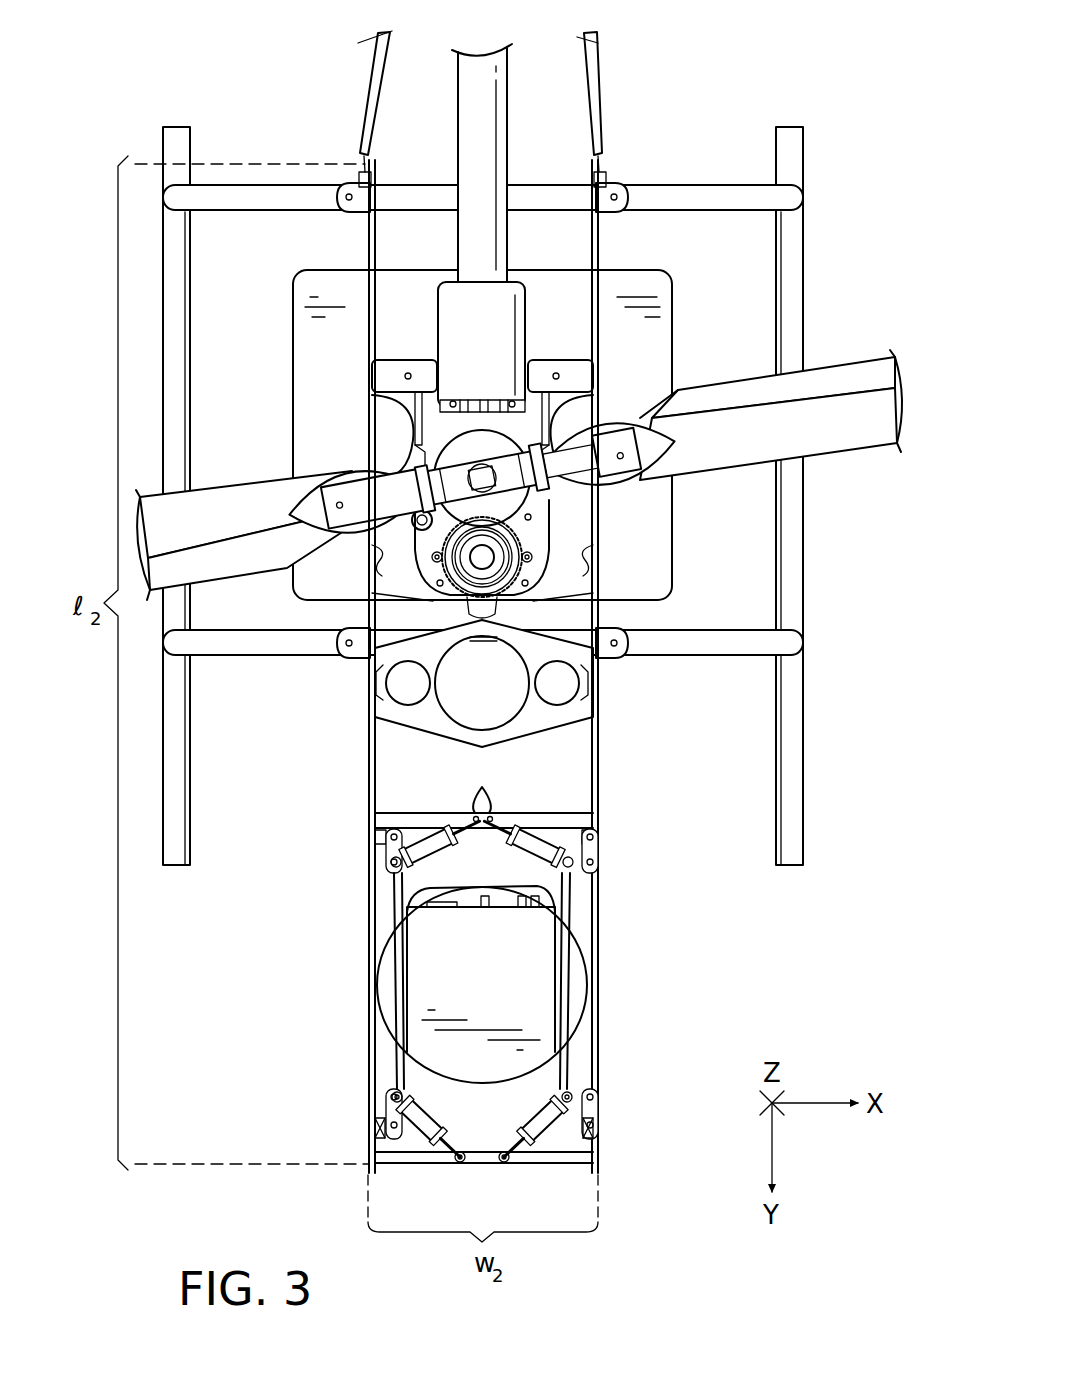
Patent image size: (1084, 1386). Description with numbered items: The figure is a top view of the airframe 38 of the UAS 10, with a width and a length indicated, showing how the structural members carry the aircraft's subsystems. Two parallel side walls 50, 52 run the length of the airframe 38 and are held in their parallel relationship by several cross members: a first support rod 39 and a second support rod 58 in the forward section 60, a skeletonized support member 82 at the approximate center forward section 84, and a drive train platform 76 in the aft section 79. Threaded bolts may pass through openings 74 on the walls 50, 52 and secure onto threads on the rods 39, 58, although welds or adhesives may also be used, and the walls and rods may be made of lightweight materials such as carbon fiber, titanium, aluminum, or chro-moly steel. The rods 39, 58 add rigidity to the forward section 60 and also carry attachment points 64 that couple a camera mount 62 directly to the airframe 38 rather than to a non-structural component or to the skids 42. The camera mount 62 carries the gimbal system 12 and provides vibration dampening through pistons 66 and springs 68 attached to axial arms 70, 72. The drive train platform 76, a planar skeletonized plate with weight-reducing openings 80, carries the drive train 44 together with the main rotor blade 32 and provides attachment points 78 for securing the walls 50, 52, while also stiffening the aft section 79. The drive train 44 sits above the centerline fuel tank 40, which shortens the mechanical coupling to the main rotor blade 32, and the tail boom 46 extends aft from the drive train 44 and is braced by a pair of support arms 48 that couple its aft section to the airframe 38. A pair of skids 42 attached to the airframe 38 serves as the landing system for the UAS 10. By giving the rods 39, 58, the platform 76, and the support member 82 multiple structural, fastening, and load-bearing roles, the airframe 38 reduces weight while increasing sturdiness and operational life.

The UAS 10 is at (843, 82).
The gimbal system 12 is at (500, 991).
The main rotor blade 32 is at (222, 536).
The airframe 38 is at (521, 666).
The first support rod 39 is at (484, 1165).
The centerline fuel tank 40 is at (673, 283).
The skids 42 is at (178, 866).
The drive train 44 is at (433, 602).
The tail boom 46 is at (507, 166).
The support arms 48 is at (364, 97).
The side wall 50 is at (372, 733).
The side wall 52 is at (597, 1022).
The second support rod 58 is at (499, 818).
The forward section 60 is at (340, 812).
The camera mount 62 is at (514, 984).
The attachment points 64 is at (525, 1190).
The pistons 66 is at (523, 850).
The springs 68 is at (383, 868).
The axial arm 70 is at (562, 1073).
The axial arm 72 is at (400, 1073).
The openings 74 is at (362, 813).
The drive train platform 76 is at (567, 578).
The attachment points 78 is at (380, 382).
The aft section 79 is at (689, 342).
The openings 80 is at (387, 425).
The support member 82 is at (422, 733).
The center forward section 84 is at (305, 613).